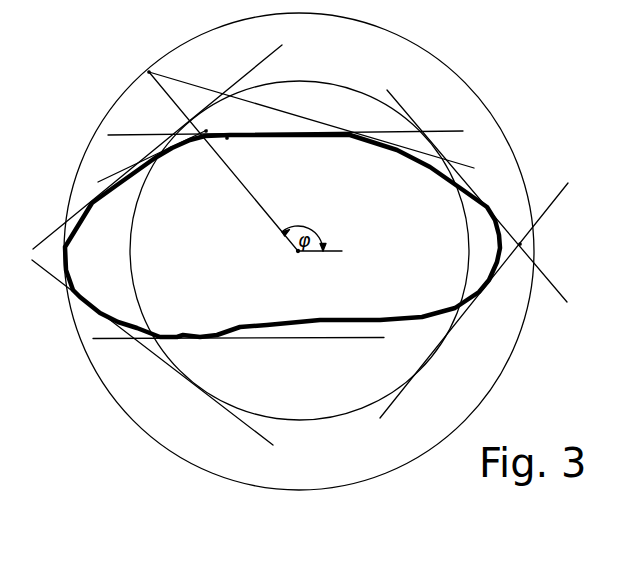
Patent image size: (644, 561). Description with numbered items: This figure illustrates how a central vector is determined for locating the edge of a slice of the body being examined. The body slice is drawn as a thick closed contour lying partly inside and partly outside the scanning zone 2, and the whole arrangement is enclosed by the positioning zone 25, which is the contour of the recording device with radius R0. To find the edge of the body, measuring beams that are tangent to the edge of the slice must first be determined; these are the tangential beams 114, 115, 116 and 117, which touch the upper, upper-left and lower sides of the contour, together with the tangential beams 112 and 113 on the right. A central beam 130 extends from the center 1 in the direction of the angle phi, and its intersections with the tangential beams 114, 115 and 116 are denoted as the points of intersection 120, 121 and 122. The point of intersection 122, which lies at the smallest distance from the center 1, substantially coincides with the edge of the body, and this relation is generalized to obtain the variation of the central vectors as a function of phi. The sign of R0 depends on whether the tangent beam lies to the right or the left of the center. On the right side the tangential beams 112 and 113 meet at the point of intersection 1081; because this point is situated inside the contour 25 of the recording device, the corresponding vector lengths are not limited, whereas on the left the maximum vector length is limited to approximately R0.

The center 1 is at (298, 252).
The scanning zone 2 is at (280, 419).
The positioning zone 25 is at (286, 488).
The tangential beam 112 is at (557, 193).
The tangential beam 113 is at (557, 291).
The tangential beam 114 is at (153, 134).
The tangential beam 115 is at (128, 168).
The tangential beam 116 is at (319, 122).
The tangential beam 117 is at (341, 339).
The point of intersection 120 is at (161, 73).
The point of intersection 121 is at (207, 130).
The point of intersection 122 is at (226, 140).
The central beam 130 is at (265, 205).
The point of intersection 1081 is at (524, 243).